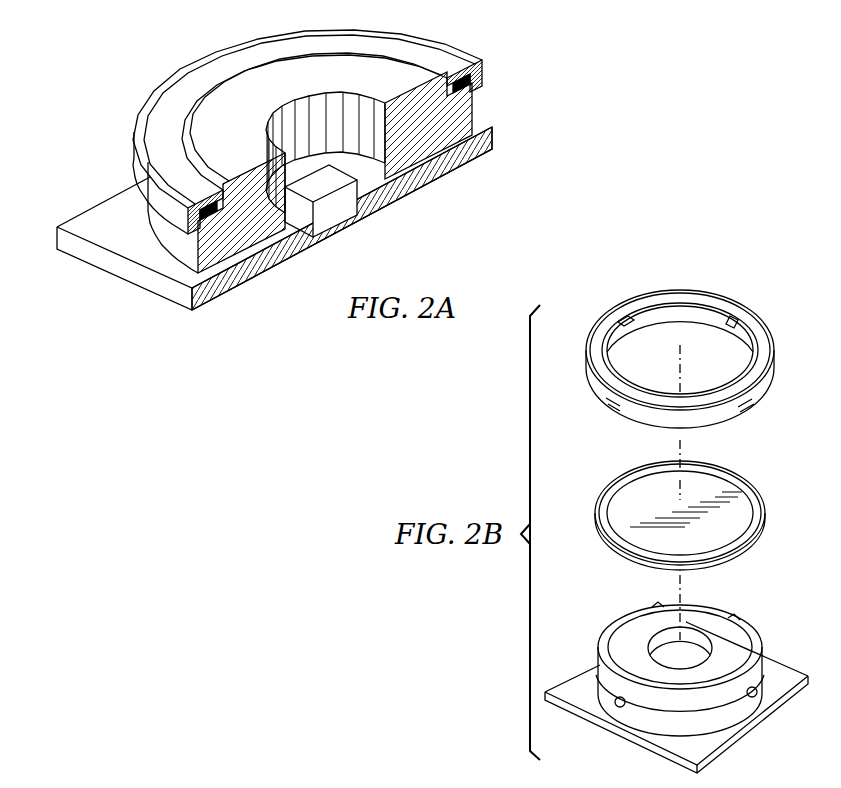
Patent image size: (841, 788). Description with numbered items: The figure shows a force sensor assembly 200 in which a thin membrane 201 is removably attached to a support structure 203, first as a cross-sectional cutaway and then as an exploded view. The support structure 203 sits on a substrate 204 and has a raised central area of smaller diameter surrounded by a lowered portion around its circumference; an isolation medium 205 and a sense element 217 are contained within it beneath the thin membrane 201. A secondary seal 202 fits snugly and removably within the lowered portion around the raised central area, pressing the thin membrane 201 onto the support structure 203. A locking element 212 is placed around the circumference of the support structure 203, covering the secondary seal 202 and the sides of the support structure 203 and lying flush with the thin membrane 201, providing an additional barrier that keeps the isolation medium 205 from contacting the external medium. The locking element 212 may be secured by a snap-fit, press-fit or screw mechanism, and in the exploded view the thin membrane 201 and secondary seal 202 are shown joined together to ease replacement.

In FIG. 2A, the force sensor assembly 200 is at (133, 73).
In FIG. 2B, the force sensor assembly 200 is at (704, 254).
In FIG. 2A, the thin membrane 201 is at (375, 57).
In FIG. 2B, the thin membrane 201 is at (712, 493).
In FIG. 2A, the secondary seal 202 is at (484, 72).
In FIG. 2B, the secondary seal 202 is at (620, 480).
In FIG. 2A, the support structure 203 is at (466, 99).
In FIG. 2B, the support structure 203 is at (732, 636).
In FIG. 2A, the substrate 204 is at (112, 202).
In FIG. 2B, the substrate 204 is at (750, 730).
In FIG. 2A, the isolation medium 205 is at (310, 150).
In FIG. 2B, the isolation medium 205 is at (700, 633).
In FIG. 2A, the locking element 212 is at (432, 46).
In FIG. 2B, the locking element 212 is at (753, 307).
In FIG. 2A, the sense element 217 is at (360, 210).